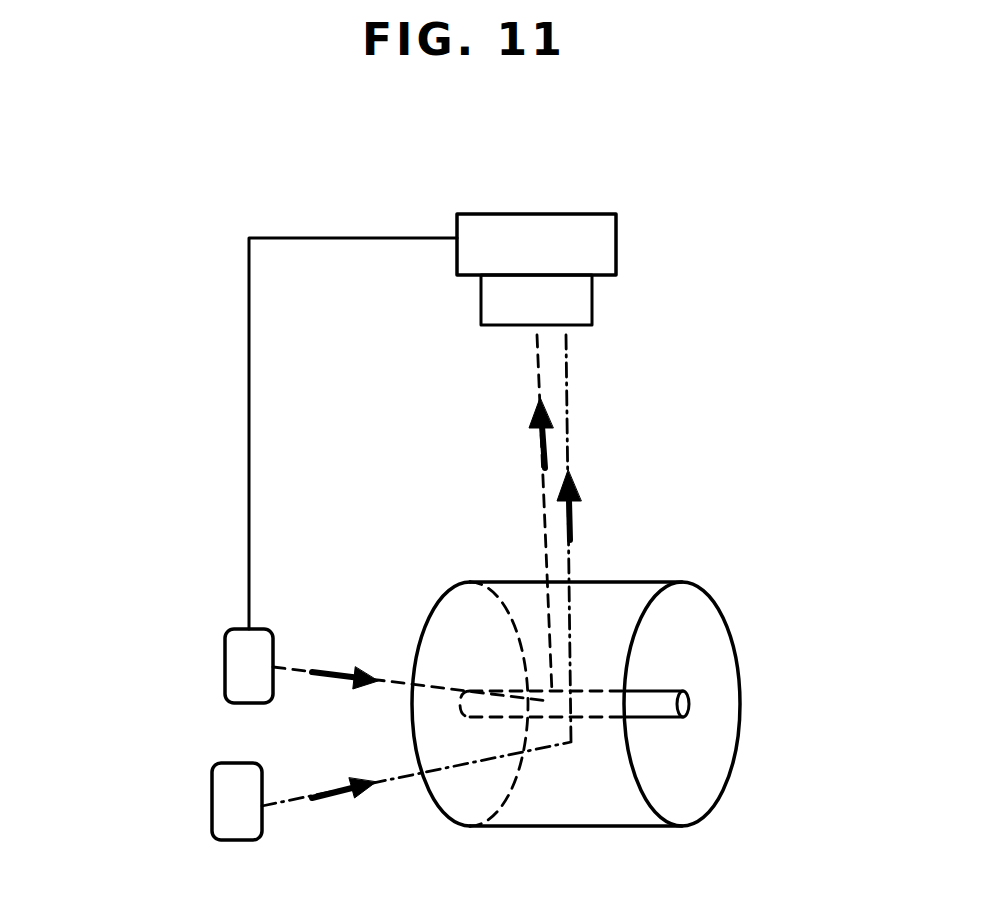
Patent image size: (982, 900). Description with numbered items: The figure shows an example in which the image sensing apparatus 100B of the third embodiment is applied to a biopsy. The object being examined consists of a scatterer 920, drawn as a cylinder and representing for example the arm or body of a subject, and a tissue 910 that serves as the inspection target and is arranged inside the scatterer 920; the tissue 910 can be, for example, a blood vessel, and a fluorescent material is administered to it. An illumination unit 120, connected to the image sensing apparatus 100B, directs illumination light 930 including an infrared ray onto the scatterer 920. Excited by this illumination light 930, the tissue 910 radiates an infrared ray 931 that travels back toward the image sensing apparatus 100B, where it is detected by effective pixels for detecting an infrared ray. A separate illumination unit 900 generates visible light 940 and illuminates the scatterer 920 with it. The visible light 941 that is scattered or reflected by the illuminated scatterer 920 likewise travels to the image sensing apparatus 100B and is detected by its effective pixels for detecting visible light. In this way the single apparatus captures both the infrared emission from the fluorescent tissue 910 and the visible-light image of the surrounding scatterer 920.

The image sensing apparatus 100B is at (544, 205).
The illumination unit 120 is at (225, 661).
The illumination unit 900 is at (212, 806).
The tissue 910 is at (690, 705).
The scatterer 920 is at (646, 580).
The illumination light 930 is at (341, 688).
The infrared ray 931 is at (542, 445).
The visible light 940 is at (336, 797).
The visible light 941 is at (574, 526).